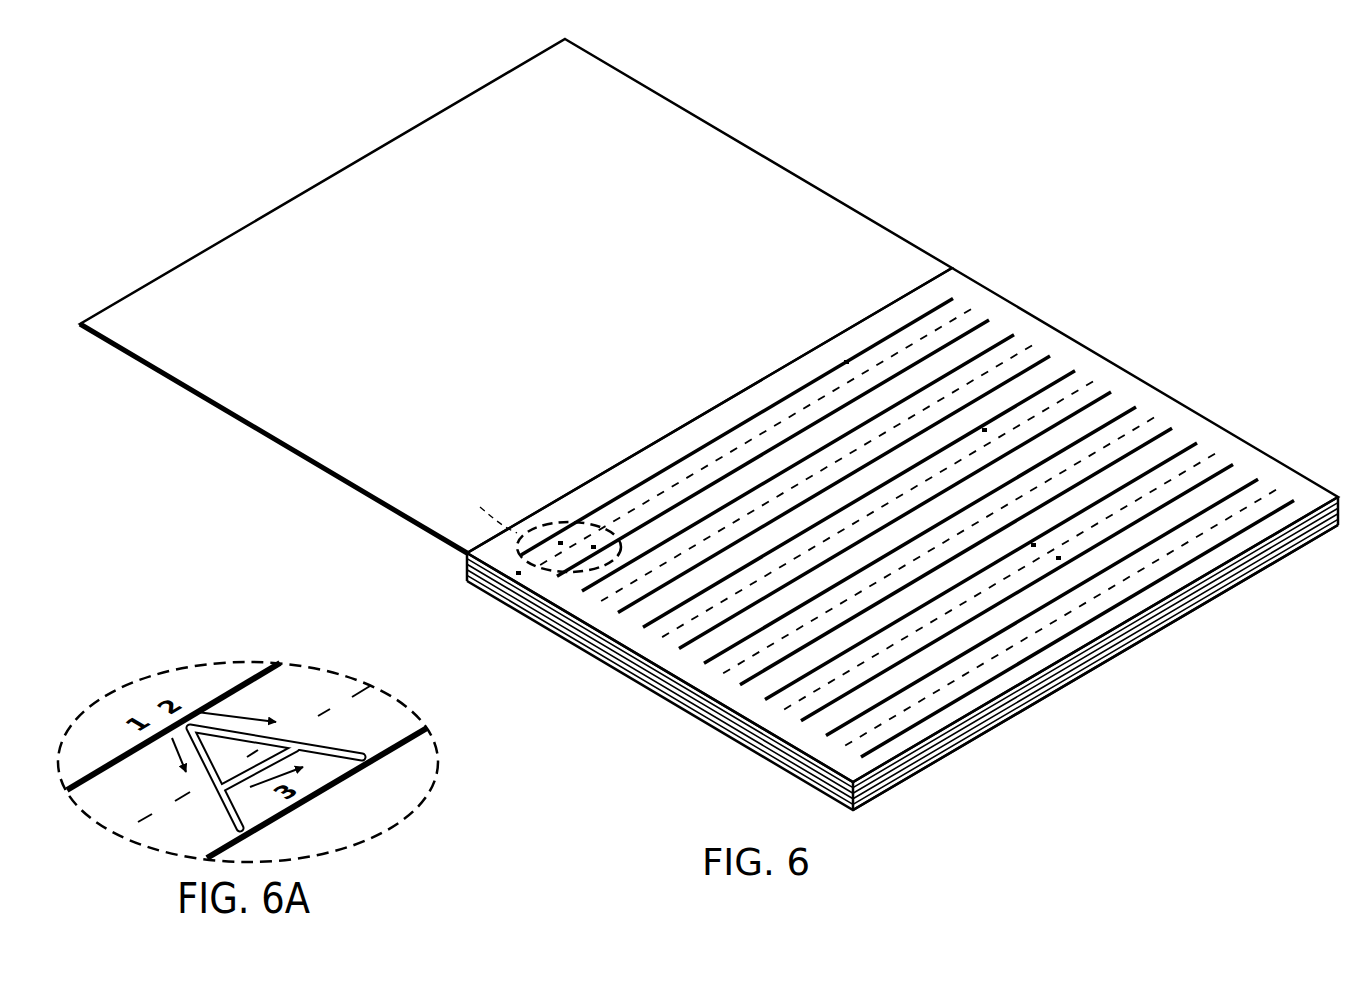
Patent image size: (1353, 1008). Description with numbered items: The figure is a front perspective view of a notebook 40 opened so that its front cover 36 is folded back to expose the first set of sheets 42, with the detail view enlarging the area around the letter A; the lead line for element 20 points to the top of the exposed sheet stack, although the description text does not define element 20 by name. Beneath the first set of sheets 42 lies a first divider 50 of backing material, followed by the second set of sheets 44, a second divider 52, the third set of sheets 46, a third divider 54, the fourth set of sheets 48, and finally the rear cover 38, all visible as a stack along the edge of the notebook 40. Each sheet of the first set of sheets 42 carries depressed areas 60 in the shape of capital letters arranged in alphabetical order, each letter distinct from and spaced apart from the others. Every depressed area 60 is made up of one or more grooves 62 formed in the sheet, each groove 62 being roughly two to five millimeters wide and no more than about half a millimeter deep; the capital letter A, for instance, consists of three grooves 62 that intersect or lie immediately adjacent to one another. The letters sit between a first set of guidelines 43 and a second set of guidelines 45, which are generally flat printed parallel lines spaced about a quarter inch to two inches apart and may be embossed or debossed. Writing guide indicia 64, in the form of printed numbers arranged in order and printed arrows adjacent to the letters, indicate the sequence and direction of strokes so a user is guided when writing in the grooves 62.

In FIG. 6, the board 20 is at (1210, 458).
In FIG. 6, the front cover 36 is at (750, 170).
In FIG. 6, the rear cover 38 is at (905, 781).
In FIG. 6, the notebook 40 is at (709, 433).
In FIG. 6, the first set of sheets 42 is at (1124, 398).
In FIG. 6, the first set of guidelines 43 is at (927, 312).
In FIG. 6A, the first set of guidelines 43 is at (128, 752).
In FIG. 6, the second set of sheets 44 is at (568, 621).
In FIG. 6, the second set of guidelines 45 is at (984, 322).
In FIG. 6A, the second set of guidelines 45 is at (344, 780).
In FIG. 6, the third set of sheets 46 is at (650, 681).
In FIG. 6, the fourth set of sheets 48 is at (760, 756).
In FIG. 6, the first divider 50 is at (533, 593).
In FIG. 6, the second divider 52 is at (610, 650).
In FIG. 6, the third divider 54 is at (705, 715).
In FIG. 6, the depressed area 60 is at (837, 492).
In FIG. 6, the groove 62 is at (847, 361).
In FIG. 6A, the groove 62 is at (262, 768).
In FIG. 6, the writing guide indicia 64 is at (922, 363).